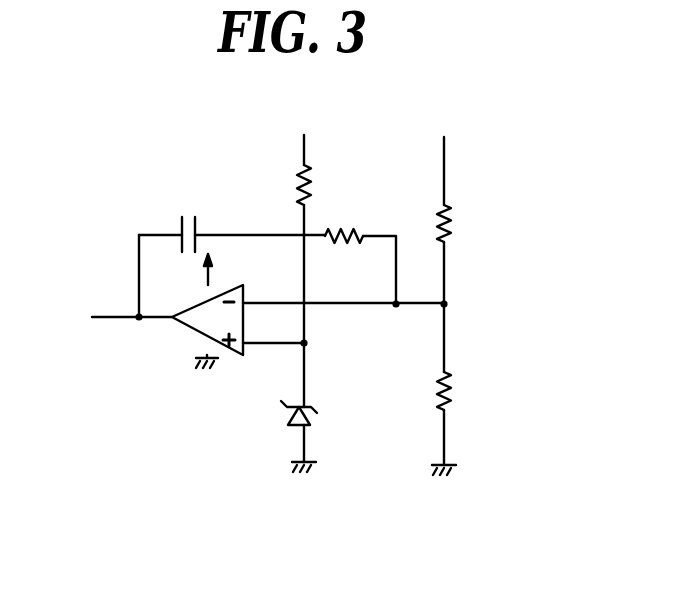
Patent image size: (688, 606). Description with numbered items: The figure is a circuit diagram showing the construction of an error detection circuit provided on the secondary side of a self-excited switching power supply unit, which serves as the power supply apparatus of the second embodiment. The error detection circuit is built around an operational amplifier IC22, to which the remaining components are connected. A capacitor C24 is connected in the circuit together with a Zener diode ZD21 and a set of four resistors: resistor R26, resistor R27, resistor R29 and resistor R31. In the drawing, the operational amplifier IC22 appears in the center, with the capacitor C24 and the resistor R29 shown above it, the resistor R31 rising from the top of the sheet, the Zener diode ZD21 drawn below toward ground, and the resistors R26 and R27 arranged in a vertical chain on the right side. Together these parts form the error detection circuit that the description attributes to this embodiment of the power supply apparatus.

The capacitor C24 is at (181, 222).
The resistor R31 is at (295, 183).
The resistor R29 is at (361, 232).
The resistor R26 is at (452, 209).
The resistor R27 is at (448, 377).
The operational amplifier IC22 is at (190, 330).
The Zener diode ZD21 is at (283, 420).